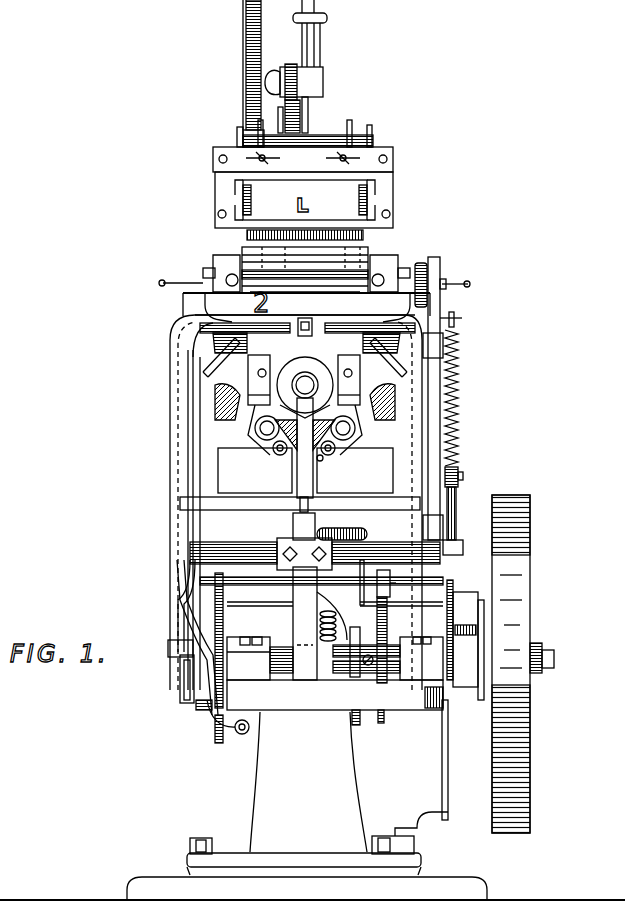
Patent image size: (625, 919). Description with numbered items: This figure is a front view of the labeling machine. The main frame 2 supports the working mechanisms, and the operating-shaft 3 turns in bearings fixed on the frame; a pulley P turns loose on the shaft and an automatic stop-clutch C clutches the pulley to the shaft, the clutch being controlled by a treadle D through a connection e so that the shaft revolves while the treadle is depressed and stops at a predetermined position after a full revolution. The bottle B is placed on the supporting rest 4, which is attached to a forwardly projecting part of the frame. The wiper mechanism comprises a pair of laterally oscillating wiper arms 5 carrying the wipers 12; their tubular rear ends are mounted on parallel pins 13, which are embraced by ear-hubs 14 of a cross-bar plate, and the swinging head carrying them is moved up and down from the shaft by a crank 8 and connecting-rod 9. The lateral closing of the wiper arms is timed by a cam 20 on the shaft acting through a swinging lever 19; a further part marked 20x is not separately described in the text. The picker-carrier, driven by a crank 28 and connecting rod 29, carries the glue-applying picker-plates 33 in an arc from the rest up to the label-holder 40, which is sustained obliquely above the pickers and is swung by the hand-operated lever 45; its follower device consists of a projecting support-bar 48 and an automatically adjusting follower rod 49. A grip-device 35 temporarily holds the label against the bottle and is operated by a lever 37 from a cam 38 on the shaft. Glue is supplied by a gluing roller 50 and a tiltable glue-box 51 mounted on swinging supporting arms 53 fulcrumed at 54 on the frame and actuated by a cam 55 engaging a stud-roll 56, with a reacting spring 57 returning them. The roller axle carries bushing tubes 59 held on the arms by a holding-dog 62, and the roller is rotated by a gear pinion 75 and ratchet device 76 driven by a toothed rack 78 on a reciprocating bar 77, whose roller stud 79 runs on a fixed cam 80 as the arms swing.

The hand-operated lever 45 is at (246, 37).
The projecting support-bar 48 is at (305, 84).
The automatically adjusting follower rod 49 is at (306, 118).
The label-holder 40 is at (213, 158).
The gluing roller 50 is at (338, 285).
The glue-box 51 is at (292, 263).
The bushing tubes 59 is at (212, 278).
The holding-dog 62 is at (205, 270).
The picker-plates 33 is at (205, 305).
The toothed rack 78 is at (438, 270).
The ratchet device 76 is at (422, 267).
The gear pinion 75 is at (446, 285).
The reciprocating bar 77 is at (456, 405).
The roller stud 79 is at (458, 475).
The fixed cam 80 is at (455, 505).
The connecting rod 29 is at (195, 450).
The grip-device 35 is at (317, 312).
The wipers 12 is at (215, 348).
The swinging supporting arms 53 is at (178, 365).
The wiper arms 5 is at (307, 405).
The bottle B is at (305, 380).
The supporting rest 4 is at (305, 448).
The axis-studs 13 is at (314, 460).
The ear-hubs 14 is at (337, 470).
The main frame 2 is at (311, 579).
The fulcrum 54 is at (242, 558).
The stud-roll 56 is at (224, 634).
The swinging lever 19 is at (322, 612).
The screw 20x is at (316, 632).
The lever 37 is at (385, 600).
The connecting-rod 9 is at (190, 612).
The crank 8 is at (185, 660).
The crank 28 is at (198, 712).
The cam 55 is at (216, 735).
The reacting spring 57 is at (242, 735).
The cam 20 is at (356, 725).
The cam 38 is at (382, 725).
The treadle D is at (305, 862).
The connection e is at (447, 757).
The pulley P is at (520, 757).
The operating-shaft 3 is at (555, 660).
The stop-clutch C is at (470, 622).